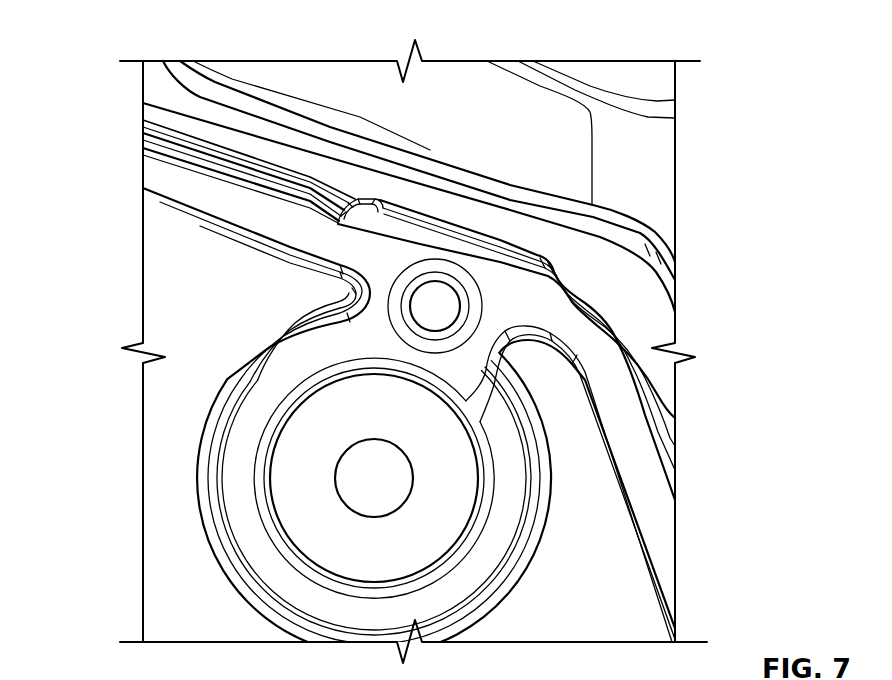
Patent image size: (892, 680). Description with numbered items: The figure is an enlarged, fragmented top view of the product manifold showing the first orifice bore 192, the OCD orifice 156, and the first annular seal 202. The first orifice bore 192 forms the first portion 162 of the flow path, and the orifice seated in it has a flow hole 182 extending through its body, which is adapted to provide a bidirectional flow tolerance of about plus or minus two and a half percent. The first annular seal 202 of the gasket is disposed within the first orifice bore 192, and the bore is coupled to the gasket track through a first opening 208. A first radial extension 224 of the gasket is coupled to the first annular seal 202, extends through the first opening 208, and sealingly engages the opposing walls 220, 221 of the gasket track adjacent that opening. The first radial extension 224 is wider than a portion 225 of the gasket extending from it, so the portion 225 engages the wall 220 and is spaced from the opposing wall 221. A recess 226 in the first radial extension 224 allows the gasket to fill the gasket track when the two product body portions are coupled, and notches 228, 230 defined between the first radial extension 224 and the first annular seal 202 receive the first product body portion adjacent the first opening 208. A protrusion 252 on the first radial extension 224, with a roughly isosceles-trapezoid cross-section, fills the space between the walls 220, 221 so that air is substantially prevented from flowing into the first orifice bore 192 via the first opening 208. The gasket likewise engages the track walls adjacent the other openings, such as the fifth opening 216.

The OCD orifice 156 is at (325, 462).
The first portion of the flow path 162 is at (520, 570).
The flow hole 182 is at (335, 488).
The first orifice bore 192 is at (208, 408).
The first annular seal 202 is at (235, 525).
The first opening 208 is at (340, 268).
The fifth opening 216 is at (330, 285).
The wall of the gasket track 220 is at (213, 223).
The opposing wall of the gasket track 221 is at (475, 230).
The first radial extension 224 is at (353, 233).
The portion of the gasket 225 is at (195, 195).
The recess 226 is at (420, 262).
The notch 228 is at (503, 297).
The notch 230 is at (367, 295).
The protrusion 252 is at (377, 197).